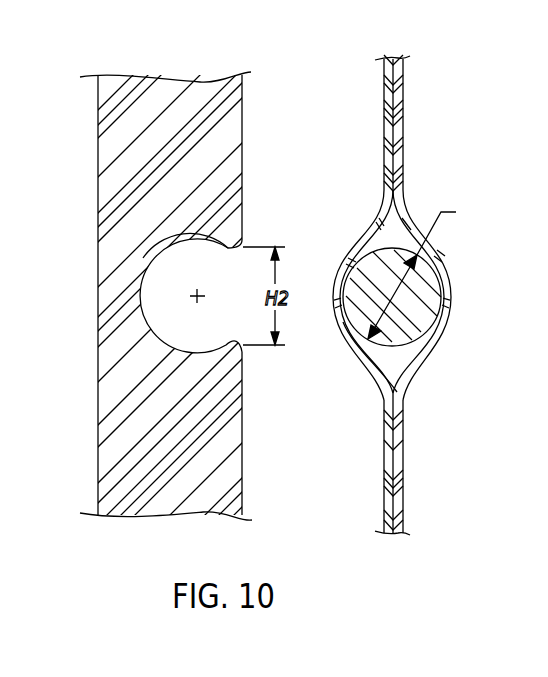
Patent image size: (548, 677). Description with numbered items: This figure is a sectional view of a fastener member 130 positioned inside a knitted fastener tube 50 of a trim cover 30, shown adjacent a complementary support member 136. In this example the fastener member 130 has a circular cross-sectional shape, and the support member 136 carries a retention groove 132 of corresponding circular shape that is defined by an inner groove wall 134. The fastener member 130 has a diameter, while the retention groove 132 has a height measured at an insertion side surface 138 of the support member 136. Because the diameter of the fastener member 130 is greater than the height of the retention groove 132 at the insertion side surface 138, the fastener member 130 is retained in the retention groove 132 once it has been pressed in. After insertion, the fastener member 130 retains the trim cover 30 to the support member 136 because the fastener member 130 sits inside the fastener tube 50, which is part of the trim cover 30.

The trim cover 30 is at (429, 274).
The fastener tube 50 is at (357, 343).
The fastener member 130 is at (422, 306).
The retention groove 132 is at (205, 285).
The inner groove wall 134 is at (141, 288).
The support member 136 is at (117, 411).
The insertion side surface 138 is at (243, 430).